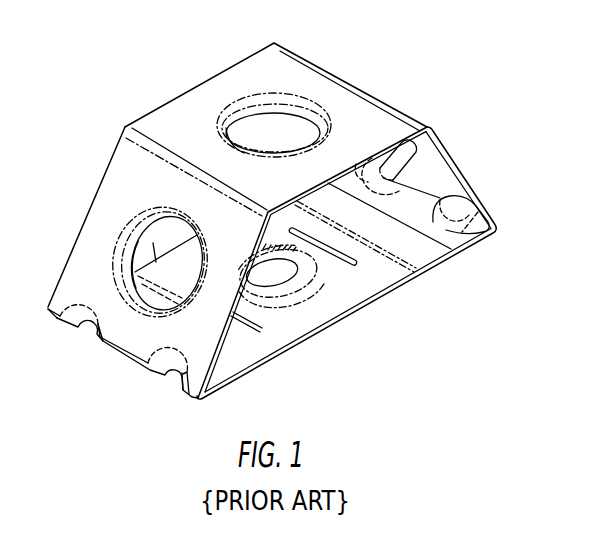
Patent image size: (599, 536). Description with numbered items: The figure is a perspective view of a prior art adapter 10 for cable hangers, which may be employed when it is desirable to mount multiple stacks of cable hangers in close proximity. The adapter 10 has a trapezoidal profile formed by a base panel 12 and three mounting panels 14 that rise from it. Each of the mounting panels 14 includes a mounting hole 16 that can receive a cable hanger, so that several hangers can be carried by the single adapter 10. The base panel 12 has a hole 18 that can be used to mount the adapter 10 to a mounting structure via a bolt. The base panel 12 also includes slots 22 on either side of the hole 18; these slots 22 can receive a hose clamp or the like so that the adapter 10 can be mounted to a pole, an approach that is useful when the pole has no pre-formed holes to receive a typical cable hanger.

The adapter 10 is at (443, 87).
The base panel 12 is at (372, 275).
The mounting panels 14 is at (182, 110).
The mounting hole 16 is at (153, 243).
The hole 18 is at (277, 268).
The slots 22 is at (418, 276).